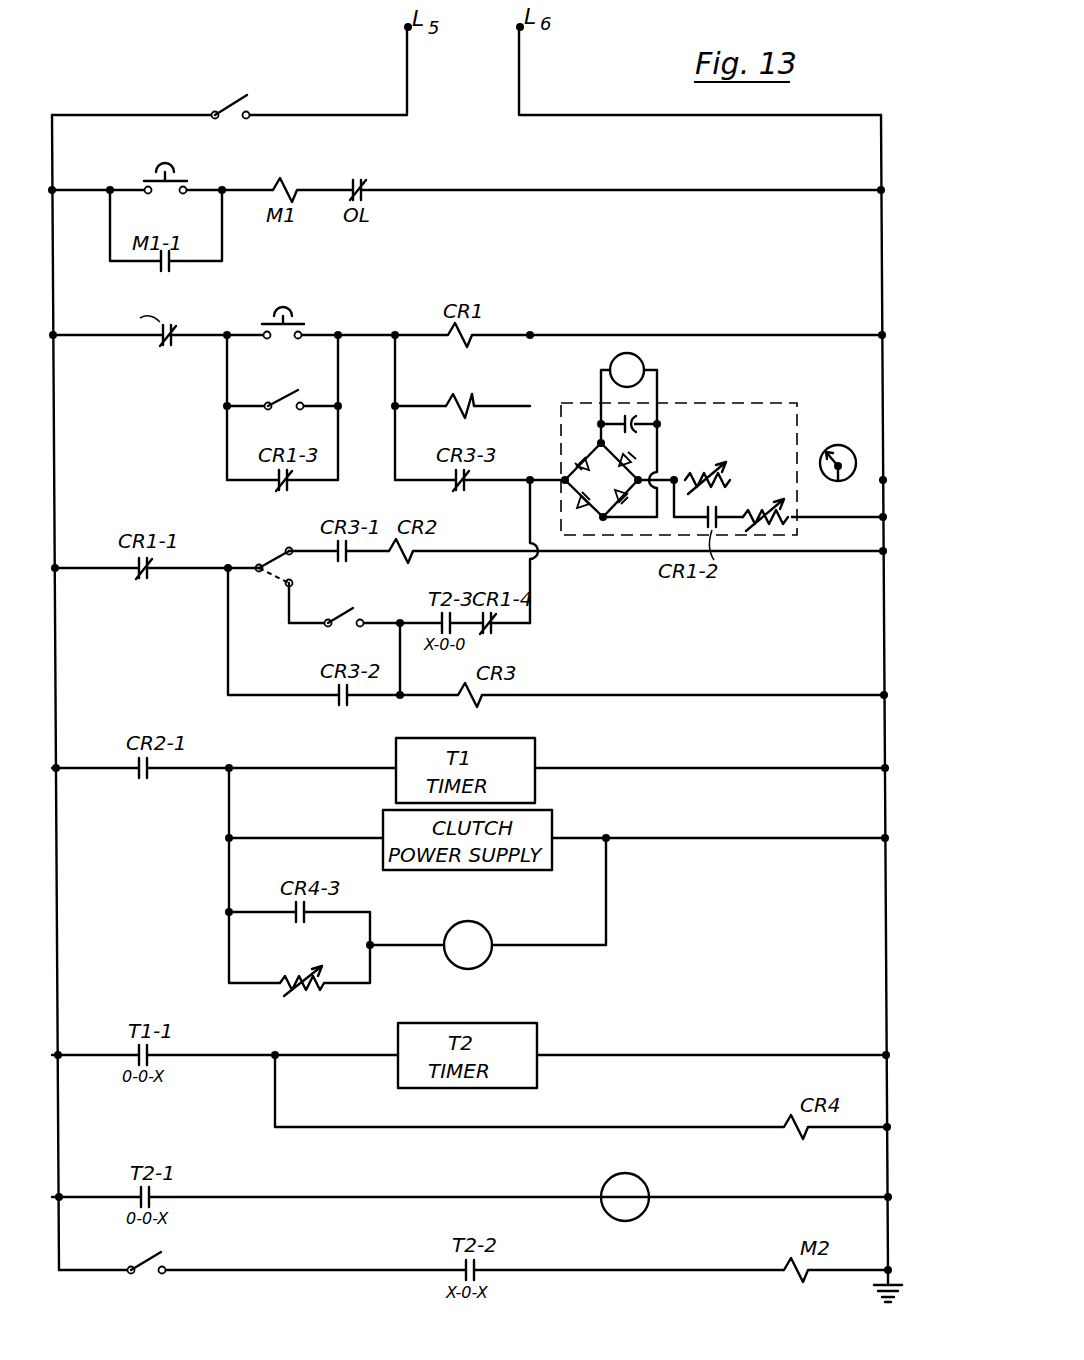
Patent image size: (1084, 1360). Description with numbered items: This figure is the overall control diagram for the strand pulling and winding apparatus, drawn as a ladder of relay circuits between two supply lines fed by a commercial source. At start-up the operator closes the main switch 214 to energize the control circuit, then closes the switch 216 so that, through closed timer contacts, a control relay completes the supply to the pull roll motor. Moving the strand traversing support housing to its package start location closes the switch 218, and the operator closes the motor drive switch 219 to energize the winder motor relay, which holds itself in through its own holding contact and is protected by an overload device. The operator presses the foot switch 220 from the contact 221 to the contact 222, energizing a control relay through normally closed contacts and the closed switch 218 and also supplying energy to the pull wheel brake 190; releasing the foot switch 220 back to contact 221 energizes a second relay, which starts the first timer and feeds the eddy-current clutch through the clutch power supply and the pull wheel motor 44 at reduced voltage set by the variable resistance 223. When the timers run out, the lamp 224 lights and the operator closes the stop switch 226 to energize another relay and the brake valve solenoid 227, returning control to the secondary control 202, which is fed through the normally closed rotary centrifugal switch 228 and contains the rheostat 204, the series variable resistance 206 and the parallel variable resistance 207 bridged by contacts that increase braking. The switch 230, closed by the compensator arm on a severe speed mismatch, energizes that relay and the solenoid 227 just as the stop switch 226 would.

The main switch 214 is at (232, 100).
The motor drive switch 219 is at (168, 192).
The rotary centrifugal switch 228 is at (172, 348).
The stop switch 226 is at (282, 340).
The switch 230 is at (290, 392).
The solenoid 227 is at (464, 392).
The pull wheel brake 190 is at (610, 362).
The control 202 is at (797, 406).
The rheostat 204 is at (860, 428).
The variable resistance 206 is at (686, 452).
The variable resistance 207 is at (744, 494).
The foot switch 220 is at (256, 564).
The contact 221 is at (293, 546).
The contact 222 is at (287, 588).
The switch 218 is at (338, 596).
The variable resistance 223 is at (288, 952).
The pull wheel motor 44 is at (444, 938).
The lamp 224 is at (602, 1188).
The switch 216 is at (146, 1260).